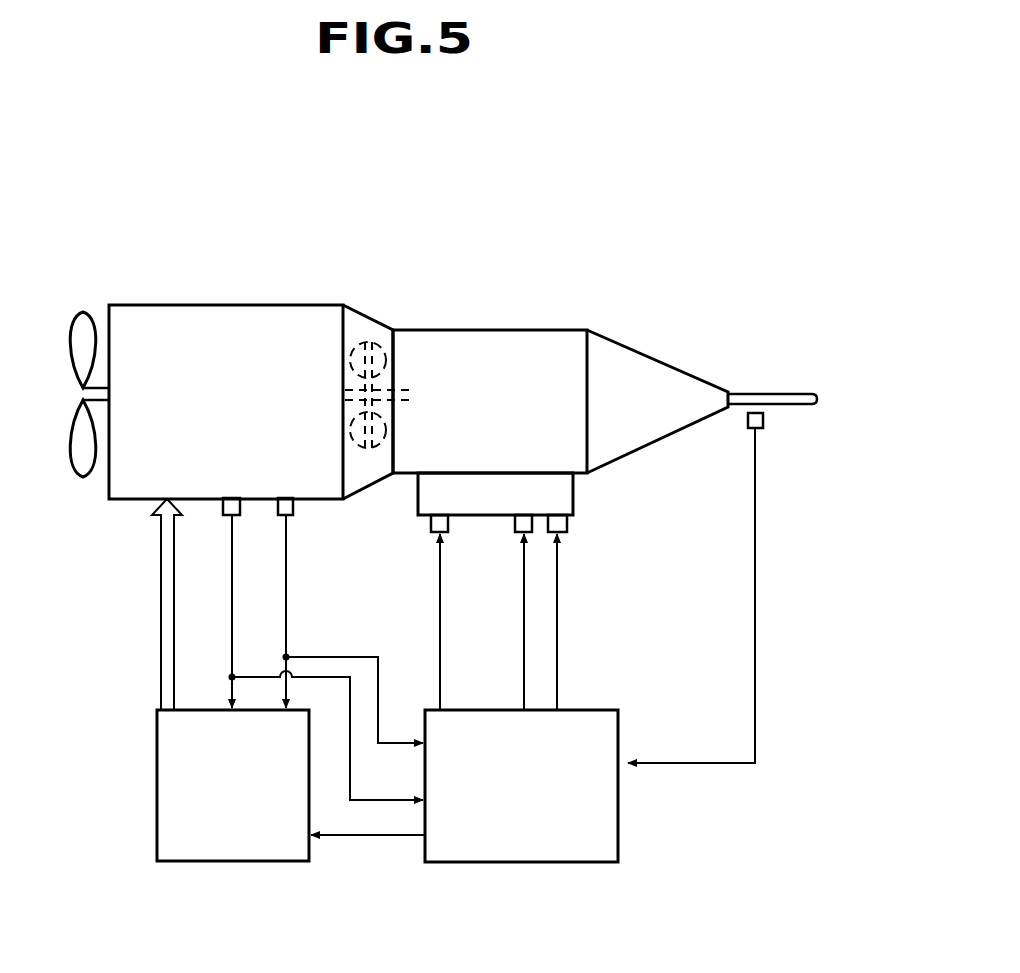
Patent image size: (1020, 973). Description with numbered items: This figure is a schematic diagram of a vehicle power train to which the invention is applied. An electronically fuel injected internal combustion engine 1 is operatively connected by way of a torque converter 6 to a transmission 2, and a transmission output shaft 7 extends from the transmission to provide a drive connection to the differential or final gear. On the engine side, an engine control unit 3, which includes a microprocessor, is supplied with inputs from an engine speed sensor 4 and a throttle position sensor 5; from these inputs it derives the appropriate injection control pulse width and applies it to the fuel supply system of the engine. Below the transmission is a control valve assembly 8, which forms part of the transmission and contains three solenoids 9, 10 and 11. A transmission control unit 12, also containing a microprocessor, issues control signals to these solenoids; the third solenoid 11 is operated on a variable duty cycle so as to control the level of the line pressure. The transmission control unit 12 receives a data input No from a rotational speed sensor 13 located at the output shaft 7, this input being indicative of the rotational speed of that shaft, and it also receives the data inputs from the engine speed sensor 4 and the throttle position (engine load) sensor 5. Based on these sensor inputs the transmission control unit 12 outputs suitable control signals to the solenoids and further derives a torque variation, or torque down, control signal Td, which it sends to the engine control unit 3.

The internal combustion engine 1 is at (206, 402).
The transmission 2 is at (410, 392).
The engine control unit 3 is at (260, 862).
The engine speed sensor 4 is at (240, 508).
The throttle position sensor 5 is at (293, 508).
The torque converter 6 is at (382, 348).
The transmission output shaft 7 is at (741, 391).
The control valve assembly 8 is at (574, 497).
The solenoid 9 is at (532, 530).
The solenoid 10 is at (567, 530).
The third solenoid 11 is at (449, 525).
The transmission control unit 12 is at (540, 863).
The rotational speed sensor 13 is at (763, 420).